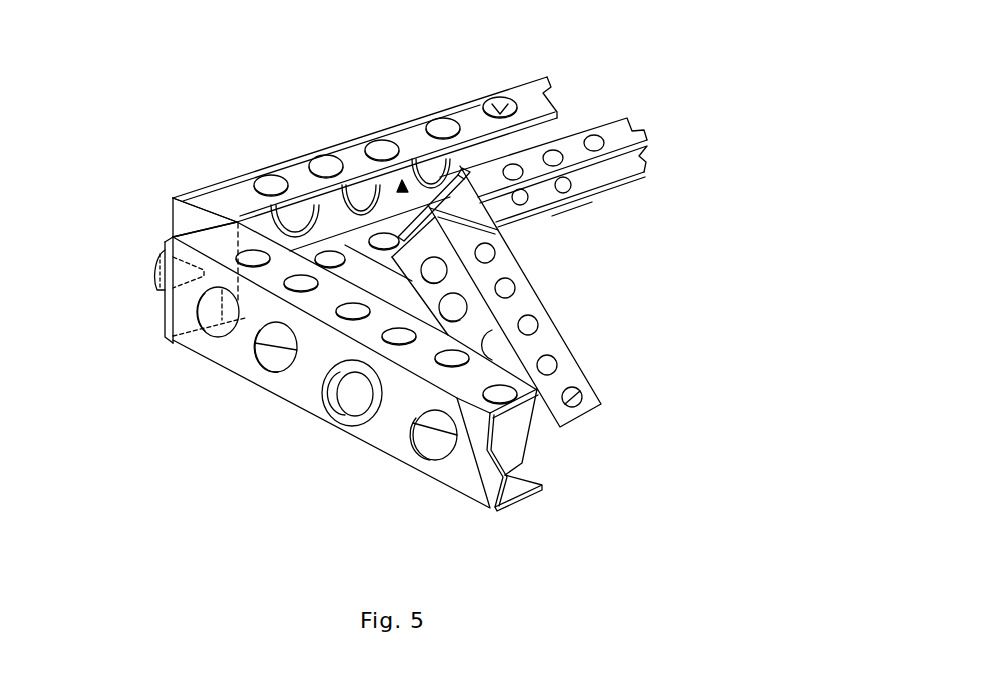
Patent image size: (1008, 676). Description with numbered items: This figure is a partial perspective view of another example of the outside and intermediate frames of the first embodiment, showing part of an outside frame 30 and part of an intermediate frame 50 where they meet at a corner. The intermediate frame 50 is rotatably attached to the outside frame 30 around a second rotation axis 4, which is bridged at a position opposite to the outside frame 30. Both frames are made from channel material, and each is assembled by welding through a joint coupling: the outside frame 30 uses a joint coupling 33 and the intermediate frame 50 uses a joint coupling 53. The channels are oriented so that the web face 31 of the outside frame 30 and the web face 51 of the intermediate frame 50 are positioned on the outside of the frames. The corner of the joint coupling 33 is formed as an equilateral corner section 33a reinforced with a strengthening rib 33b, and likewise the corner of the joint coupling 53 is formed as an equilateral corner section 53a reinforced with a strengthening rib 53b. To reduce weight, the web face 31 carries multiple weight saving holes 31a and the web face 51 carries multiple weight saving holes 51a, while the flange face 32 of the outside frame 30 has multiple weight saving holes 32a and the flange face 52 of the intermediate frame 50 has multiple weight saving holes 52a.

The second rotation axis 4 is at (483, 343).
The outside frame 30 is at (277, 412).
The web face 31 is at (383, 432).
The weight saving holes 31a is at (433, 440).
The flange face 32 is at (453, 107).
The weight saving holes 32a is at (505, 97).
The joint coupling 33 is at (145, 247).
The equilateral corner section 33a is at (182, 218).
The strengthening rib 33b is at (155, 288).
The intermediate frame 50 is at (567, 325).
The web face 51 is at (548, 424).
The weight saving holes 51a is at (505, 262).
The flange face 52 is at (553, 343).
The weight saving holes 52a is at (583, 395).
The joint coupling 53 is at (375, 185).
The equilateral corner section 53a is at (440, 192).
The strengthening rib 53b is at (330, 217).